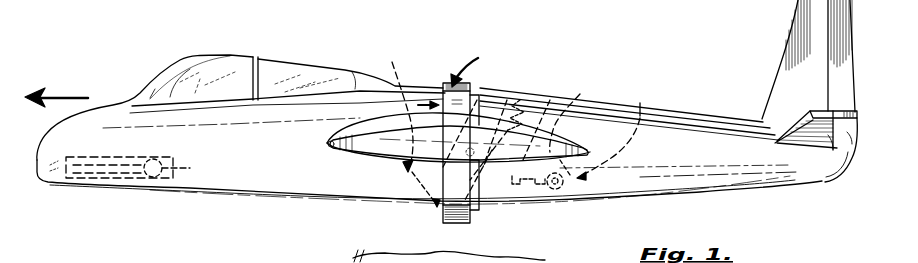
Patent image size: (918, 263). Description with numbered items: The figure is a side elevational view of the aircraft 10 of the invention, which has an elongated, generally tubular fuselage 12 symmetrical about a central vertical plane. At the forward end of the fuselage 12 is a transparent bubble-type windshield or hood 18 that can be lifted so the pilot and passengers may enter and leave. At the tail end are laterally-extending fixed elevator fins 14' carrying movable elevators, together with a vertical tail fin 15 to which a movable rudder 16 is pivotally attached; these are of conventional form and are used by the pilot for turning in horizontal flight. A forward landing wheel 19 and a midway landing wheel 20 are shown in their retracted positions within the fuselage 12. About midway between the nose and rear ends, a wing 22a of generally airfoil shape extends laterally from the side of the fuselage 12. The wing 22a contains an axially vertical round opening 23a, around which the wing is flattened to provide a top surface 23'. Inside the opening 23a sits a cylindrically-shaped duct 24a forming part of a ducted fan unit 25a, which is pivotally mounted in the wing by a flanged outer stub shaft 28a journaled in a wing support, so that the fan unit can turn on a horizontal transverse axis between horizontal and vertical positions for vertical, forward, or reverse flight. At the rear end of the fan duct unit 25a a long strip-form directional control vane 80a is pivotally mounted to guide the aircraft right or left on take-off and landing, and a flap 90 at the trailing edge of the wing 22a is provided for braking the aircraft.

The aircraft 10 is at (301, 204).
The fuselage 12 is at (330, 172).
The fixed elevator fins 14' is at (819, 183).
The vertical tail fin 15 is at (800, 54).
The rudder 16 is at (838, 86).
The windshield or hood 18 is at (220, 78).
The landing wheel 19 is at (156, 178).
The landing wheel 20 is at (560, 188).
The wing 22a is at (407, 145).
The round opening 23a is at (400, 125).
The top surface 23' is at (595, 127).
The duct 24a is at (460, 107).
The ducted fan unit 25a is at (461, 64).
The flanged outer stub shaft 28a is at (515, 98).
The directional control vane 80a is at (480, 210).
The flap 90 is at (555, 142).